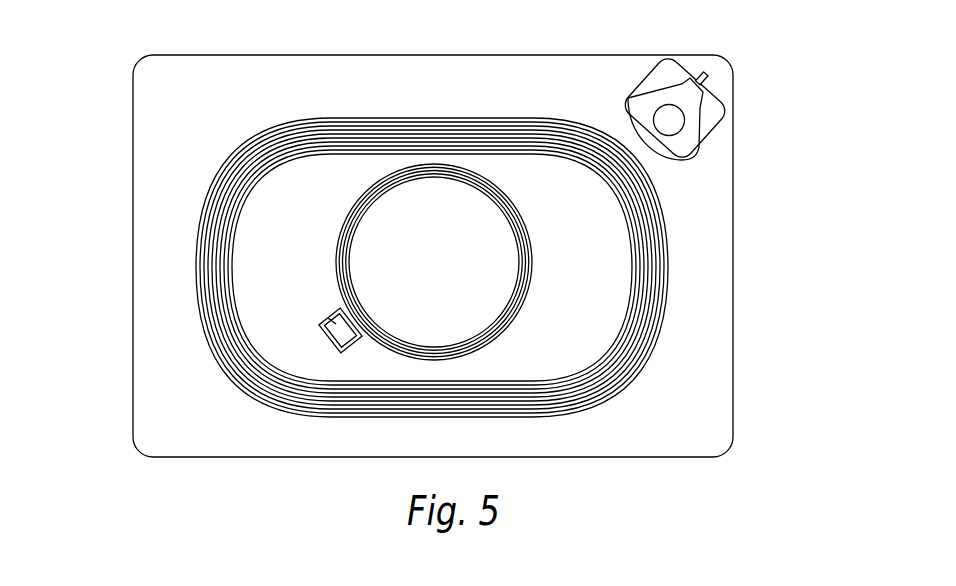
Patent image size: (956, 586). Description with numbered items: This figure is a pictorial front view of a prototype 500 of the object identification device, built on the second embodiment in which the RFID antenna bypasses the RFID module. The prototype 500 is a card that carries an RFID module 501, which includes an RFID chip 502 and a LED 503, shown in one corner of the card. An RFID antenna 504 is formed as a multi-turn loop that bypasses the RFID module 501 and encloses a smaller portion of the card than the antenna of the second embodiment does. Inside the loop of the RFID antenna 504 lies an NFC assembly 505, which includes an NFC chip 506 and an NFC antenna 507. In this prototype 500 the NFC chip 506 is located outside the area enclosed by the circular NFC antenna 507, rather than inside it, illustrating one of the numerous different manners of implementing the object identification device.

The prototype 500 is at (102, 61).
The RFID module 501 is at (727, 122).
The RFID chip 502 is at (669, 122).
The LED 503 is at (707, 79).
The RFID antenna 504 is at (653, 268).
The NFC assembly 505 is at (305, 310).
The NFC chip 506 is at (338, 329).
The NFC antenna 507 is at (337, 265).